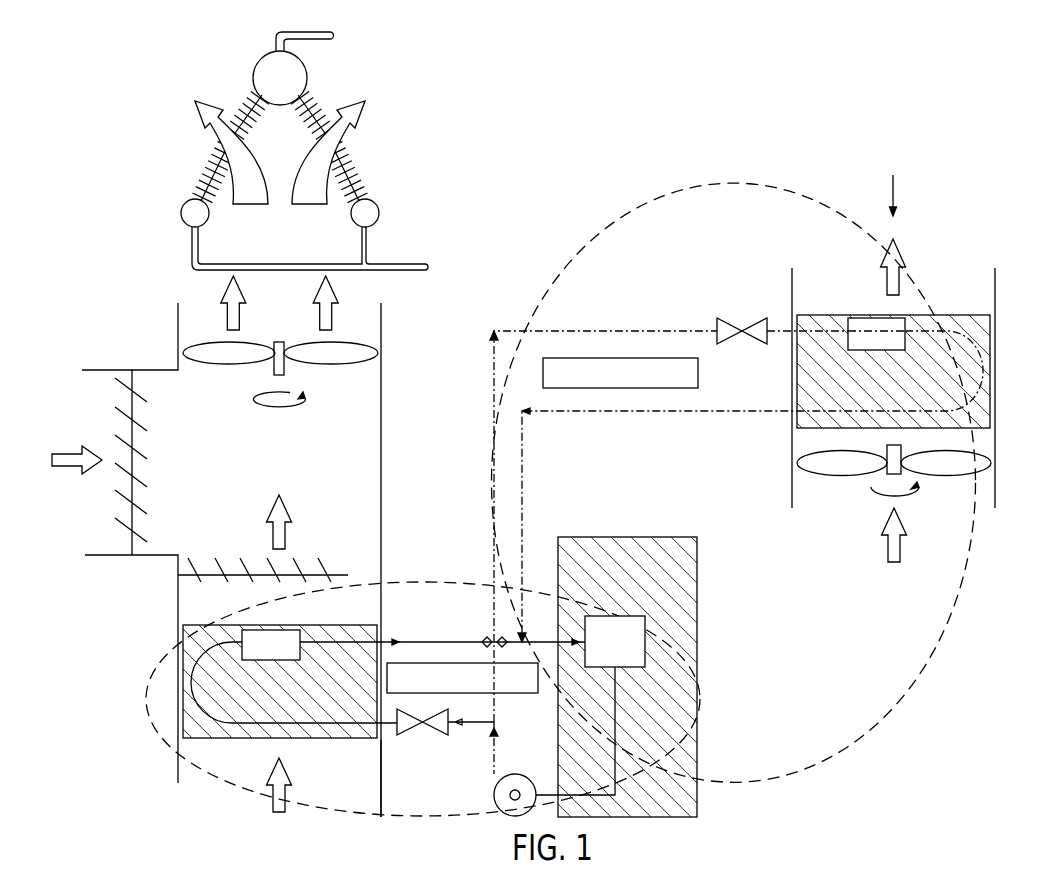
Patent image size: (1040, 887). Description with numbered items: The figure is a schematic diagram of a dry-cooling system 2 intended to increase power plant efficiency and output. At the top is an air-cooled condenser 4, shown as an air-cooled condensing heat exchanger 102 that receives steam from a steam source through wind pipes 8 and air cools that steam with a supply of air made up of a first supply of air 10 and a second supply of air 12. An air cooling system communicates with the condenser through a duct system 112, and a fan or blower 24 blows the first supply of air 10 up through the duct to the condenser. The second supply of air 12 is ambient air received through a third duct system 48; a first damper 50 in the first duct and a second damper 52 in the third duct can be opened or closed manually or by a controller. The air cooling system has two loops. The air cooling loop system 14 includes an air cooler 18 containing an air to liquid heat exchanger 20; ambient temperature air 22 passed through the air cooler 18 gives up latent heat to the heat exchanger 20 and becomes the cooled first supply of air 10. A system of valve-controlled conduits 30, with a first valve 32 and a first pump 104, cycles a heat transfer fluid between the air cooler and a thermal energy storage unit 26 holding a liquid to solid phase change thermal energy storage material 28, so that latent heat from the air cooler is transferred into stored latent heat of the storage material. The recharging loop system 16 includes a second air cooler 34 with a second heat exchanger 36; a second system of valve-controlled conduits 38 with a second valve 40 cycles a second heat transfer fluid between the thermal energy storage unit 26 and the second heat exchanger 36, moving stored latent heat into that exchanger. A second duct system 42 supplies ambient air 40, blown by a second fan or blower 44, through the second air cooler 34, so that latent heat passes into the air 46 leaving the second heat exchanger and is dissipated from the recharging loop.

The dry-cooling system 2 is at (573, 132).
The air-cooled condenser 4 is at (160, 112).
The wind pipes 8 is at (317, 37).
The first supply of air 10 is at (286, 535).
The second supply of air 12 is at (58, 468).
The air cooling loop system 14 is at (413, 583).
The recharging loop system 16 is at (740, 183).
The air cooler 18 is at (232, 738).
The heat exchanger 20 is at (270, 660).
The ambient temperature air 22 is at (285, 793).
The fan or blower 24 is at (230, 365).
The thermal energy storage unit 26 is at (698, 755).
The thermal energy storage material 28 is at (645, 641).
The system of valve-controlled conduits 30 is at (483, 664).
The first valve 32 is at (423, 731).
The second air cooler 34 is at (942, 315).
The second heat exchanger 36 is at (860, 325).
The second system of valve-controlled conduits 38 is at (617, 331).
The second valve 40 is at (742, 320).
The second duct system 42 is at (792, 470).
The second fan or blower 44 is at (840, 475).
The air passed through the second heat exchanger 46 is at (894, 189).
The third duct system 48 is at (78, 545).
The first damper 50 is at (210, 572).
The second damper 52 is at (143, 480).
The heat exchanger 102 is at (352, 157).
The first pump 104 is at (517, 775).
The duct system 112 is at (372, 752).